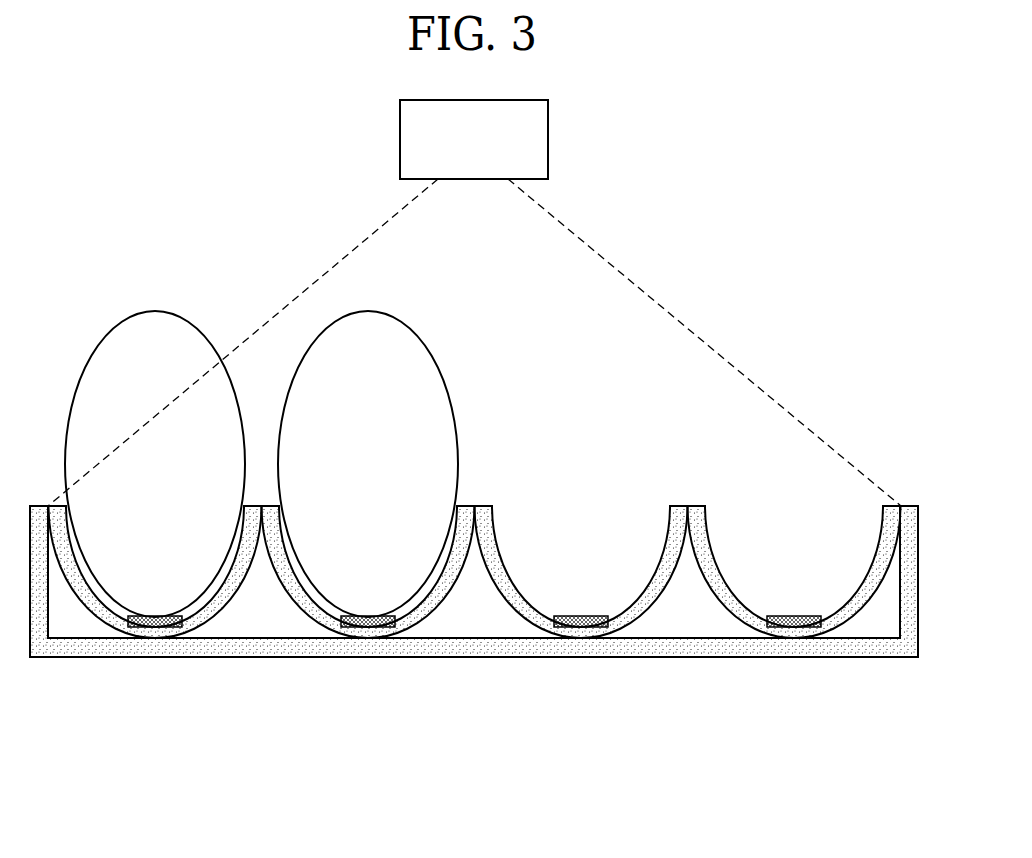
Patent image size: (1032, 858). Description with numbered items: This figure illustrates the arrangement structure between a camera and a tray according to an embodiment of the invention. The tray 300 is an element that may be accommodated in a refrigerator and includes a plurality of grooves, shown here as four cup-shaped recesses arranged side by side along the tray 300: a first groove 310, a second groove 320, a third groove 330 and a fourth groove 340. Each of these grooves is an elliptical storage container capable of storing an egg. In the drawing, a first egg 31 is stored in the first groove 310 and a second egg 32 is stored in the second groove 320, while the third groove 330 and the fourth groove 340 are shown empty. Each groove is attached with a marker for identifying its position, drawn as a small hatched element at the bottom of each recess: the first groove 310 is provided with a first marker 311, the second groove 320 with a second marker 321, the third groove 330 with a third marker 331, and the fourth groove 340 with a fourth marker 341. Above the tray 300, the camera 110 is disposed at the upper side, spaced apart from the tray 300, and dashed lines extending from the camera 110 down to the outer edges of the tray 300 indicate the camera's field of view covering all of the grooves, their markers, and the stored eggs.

The camera 110 is at (548, 140).
The tray 300 is at (432, 648).
The first groove 310 is at (93, 605).
The first marker 311 is at (155, 627).
The second groove 320 is at (307, 605).
The second marker 321 is at (368, 627).
The third groove 330 is at (518, 605).
The third marker 331 is at (581, 627).
The fourth groove 340 is at (733, 605).
The fourth marker 341 is at (794, 627).
The first egg 31 is at (125, 333).
The second egg 32 is at (397, 335).